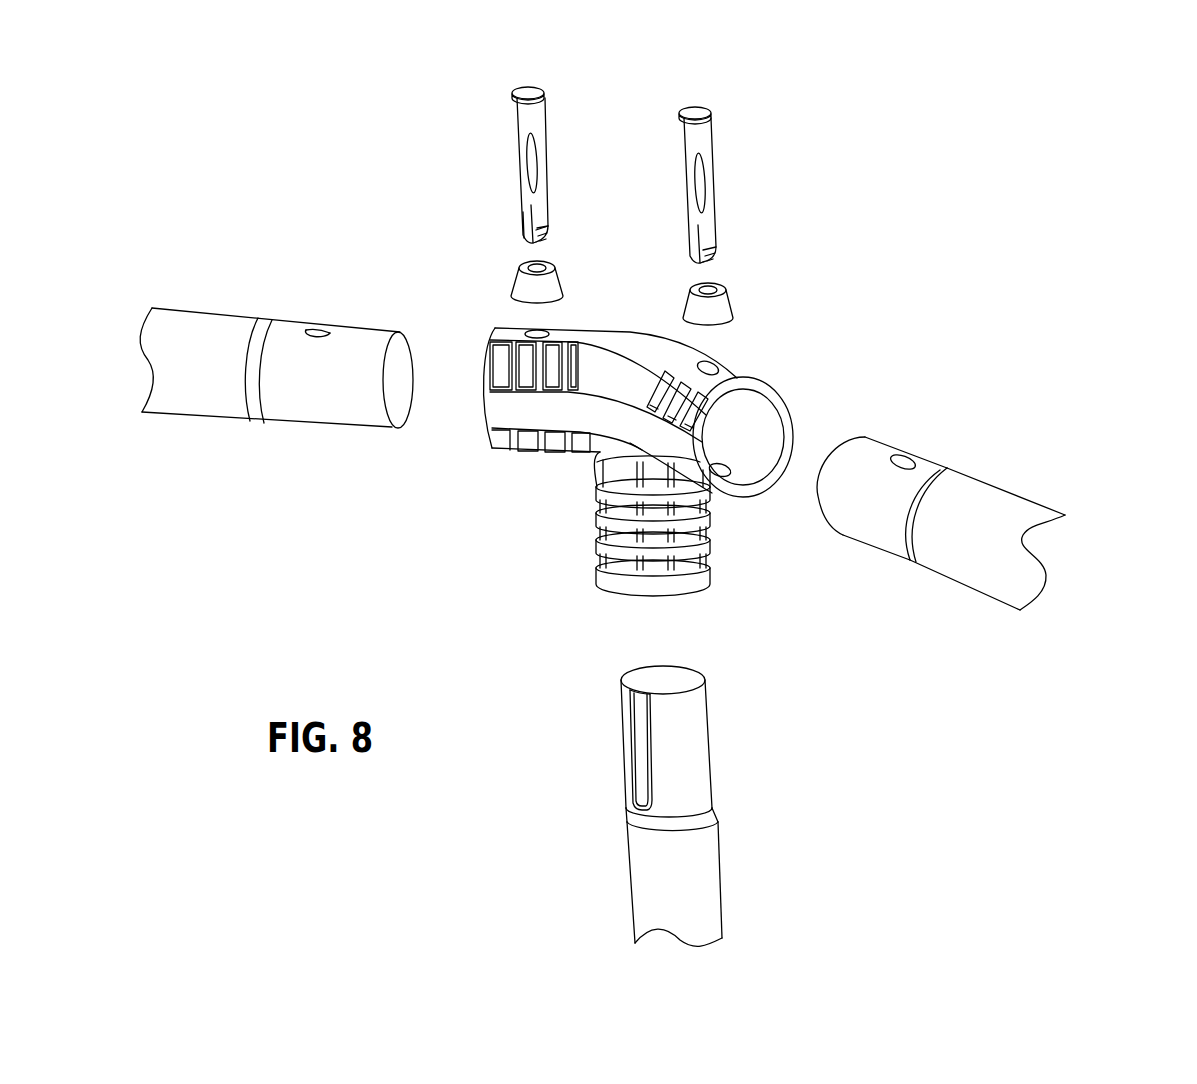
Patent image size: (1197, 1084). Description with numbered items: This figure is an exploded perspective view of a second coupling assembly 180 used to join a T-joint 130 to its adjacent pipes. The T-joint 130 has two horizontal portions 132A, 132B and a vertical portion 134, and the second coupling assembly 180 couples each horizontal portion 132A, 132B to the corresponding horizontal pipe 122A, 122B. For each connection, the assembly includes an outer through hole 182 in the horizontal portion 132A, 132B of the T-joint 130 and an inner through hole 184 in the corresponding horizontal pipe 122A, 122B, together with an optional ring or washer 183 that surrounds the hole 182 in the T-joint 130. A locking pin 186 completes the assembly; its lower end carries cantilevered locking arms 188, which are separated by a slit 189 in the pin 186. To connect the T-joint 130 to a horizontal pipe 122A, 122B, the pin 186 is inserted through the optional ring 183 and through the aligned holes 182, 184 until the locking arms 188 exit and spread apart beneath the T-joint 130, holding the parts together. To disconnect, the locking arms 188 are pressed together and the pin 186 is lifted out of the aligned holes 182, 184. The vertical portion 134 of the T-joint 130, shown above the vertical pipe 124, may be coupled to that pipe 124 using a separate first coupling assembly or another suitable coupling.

The second coupling assembly 180 is at (790, 322).
The T-joint 130 is at (739, 569).
The horizontal portion 132A is at (761, 460).
The horizontal portion 132B is at (523, 450).
The vertical portion 134 is at (600, 575).
The outer through hole 182 is at (525, 332).
The ring or washer 183 is at (522, 264).
The inner through hole 184 is at (316, 327).
The locking pin 186 is at (512, 92).
The cantilevered locking arms 188 is at (544, 232).
The slit 189 is at (526, 214).
The horizontal pipe 122A is at (1003, 521).
The horizontal pipe 122B is at (210, 405).
The vertical pipe 124 is at (688, 738).